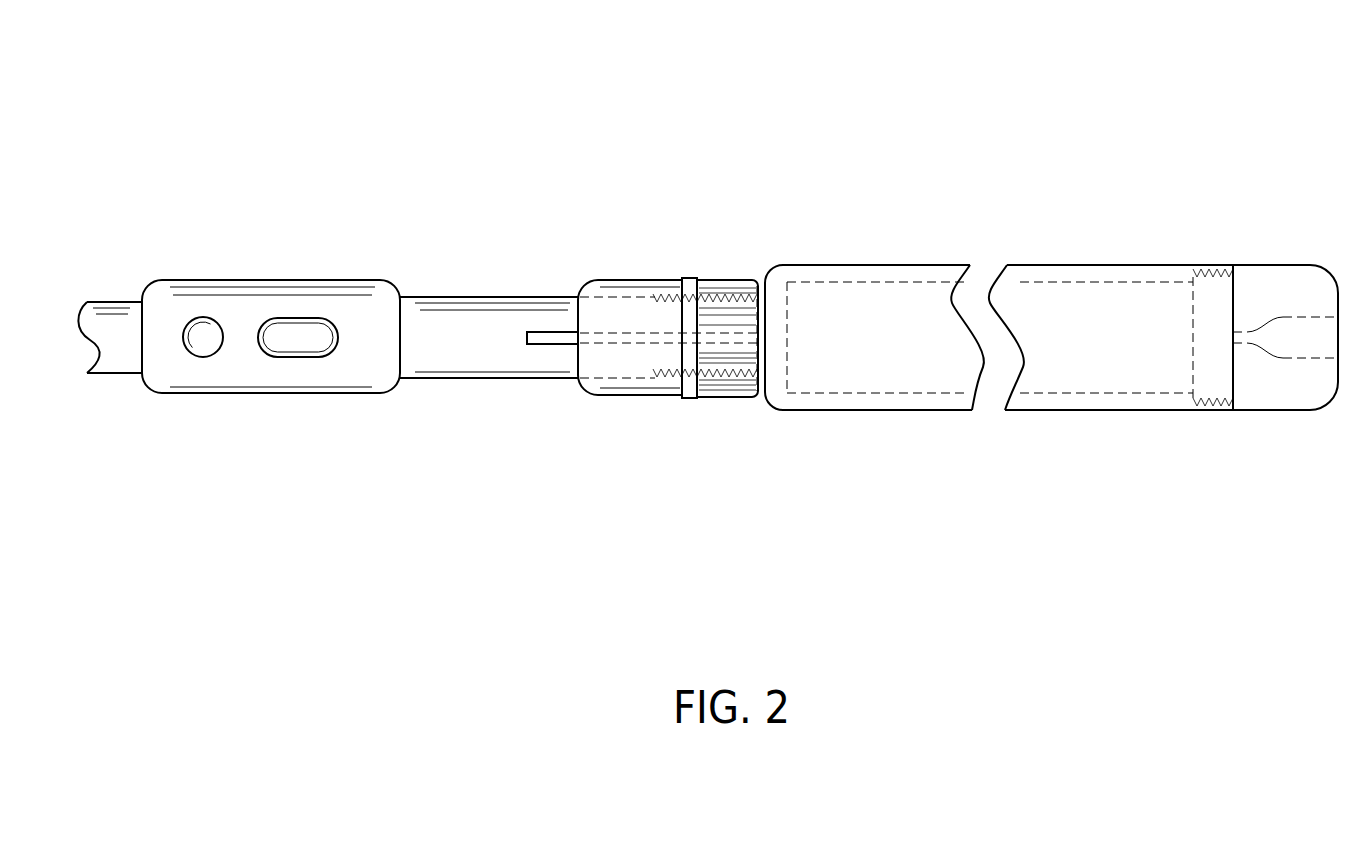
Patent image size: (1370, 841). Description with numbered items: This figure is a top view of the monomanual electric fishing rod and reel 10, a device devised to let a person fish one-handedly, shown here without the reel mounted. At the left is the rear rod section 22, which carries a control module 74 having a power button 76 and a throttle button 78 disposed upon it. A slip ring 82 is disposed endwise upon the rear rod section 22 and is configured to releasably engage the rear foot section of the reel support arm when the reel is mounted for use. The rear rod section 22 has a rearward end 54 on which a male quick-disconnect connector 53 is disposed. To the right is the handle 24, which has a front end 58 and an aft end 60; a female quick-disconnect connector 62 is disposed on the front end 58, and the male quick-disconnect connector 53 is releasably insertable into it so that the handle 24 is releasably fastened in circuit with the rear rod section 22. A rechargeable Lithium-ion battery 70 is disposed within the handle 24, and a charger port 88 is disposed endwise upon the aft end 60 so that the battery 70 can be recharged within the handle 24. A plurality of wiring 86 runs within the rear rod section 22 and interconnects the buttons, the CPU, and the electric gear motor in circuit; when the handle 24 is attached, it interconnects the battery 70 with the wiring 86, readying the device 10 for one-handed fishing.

The monomanual electric fishing rod and reel 10 is at (1160, 148).
The rear rod section 22 is at (110, 313).
The handle 24 is at (1088, 267).
The male quick-disconnect connector 53 is at (687, 285).
The rearward end 54 is at (552, 368).
The front end 58 is at (775, 275).
The aft end 60 is at (1315, 275).
The female quick-disconnect connector 62 is at (738, 283).
The rechargeable Lithium-ion battery 70 is at (1040, 300).
The control module 74 is at (350, 298).
The power button 76 is at (213, 338).
The throttle button 78 is at (287, 345).
The slip ring 82 is at (650, 312).
The plurality of wiring 86 is at (642, 338).
The charger port 88 is at (1312, 350).